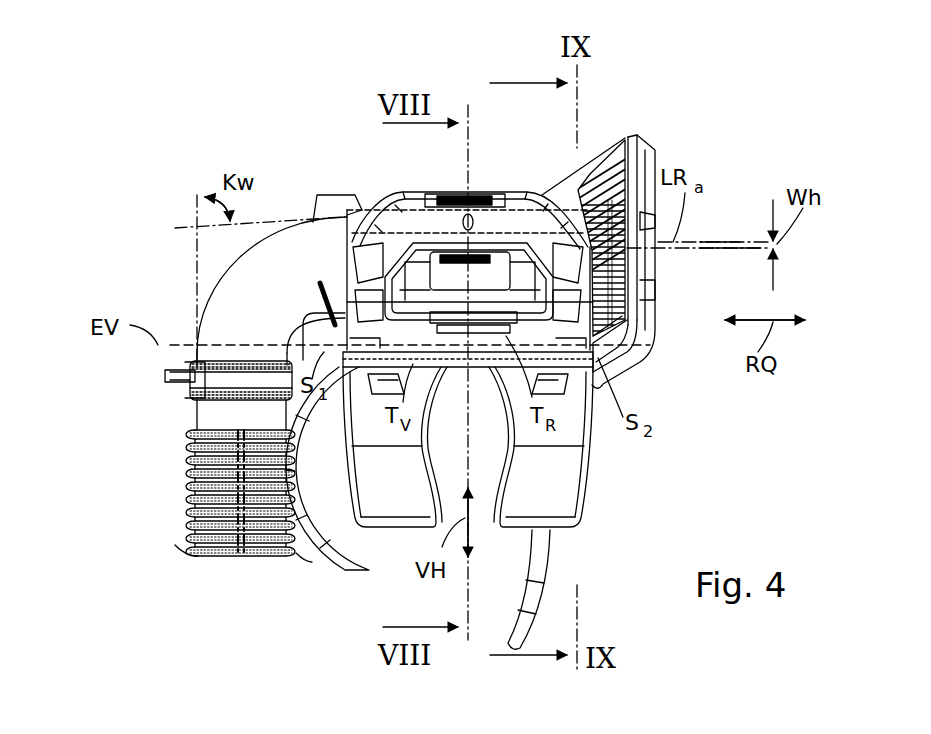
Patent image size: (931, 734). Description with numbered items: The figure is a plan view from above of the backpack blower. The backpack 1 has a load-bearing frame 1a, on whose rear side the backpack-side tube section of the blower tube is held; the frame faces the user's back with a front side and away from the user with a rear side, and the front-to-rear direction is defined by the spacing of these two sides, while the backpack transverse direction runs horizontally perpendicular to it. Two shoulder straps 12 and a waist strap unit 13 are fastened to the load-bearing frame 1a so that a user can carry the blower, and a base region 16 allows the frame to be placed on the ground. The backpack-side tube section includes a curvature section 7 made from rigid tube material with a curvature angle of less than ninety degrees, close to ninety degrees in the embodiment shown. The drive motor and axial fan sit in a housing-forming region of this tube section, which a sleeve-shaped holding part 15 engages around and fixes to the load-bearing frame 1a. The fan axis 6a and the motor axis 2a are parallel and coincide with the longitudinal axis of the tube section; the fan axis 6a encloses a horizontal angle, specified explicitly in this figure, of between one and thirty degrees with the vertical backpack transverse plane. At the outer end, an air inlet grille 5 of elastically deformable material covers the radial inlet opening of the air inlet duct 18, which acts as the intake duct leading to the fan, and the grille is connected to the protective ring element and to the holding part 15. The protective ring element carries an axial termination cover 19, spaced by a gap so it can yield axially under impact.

The backpack 1 is at (606, 434).
The load-bearing frame 1a is at (468, 348).
The motor axis 2a is at (728, 247).
The air inlet grille 5 is at (628, 140).
The fan axis 6a is at (712, 242).
The curvature section 7 is at (222, 288).
The shoulder straps 12 is at (514, 446).
The waist strap unit 13 is at (326, 557).
The sleeve-shaped holding part 15 is at (425, 194).
The base region 16 is at (328, 204).
The air inlet duct 18 is at (609, 150).
The axial termination cover 19 is at (658, 290).